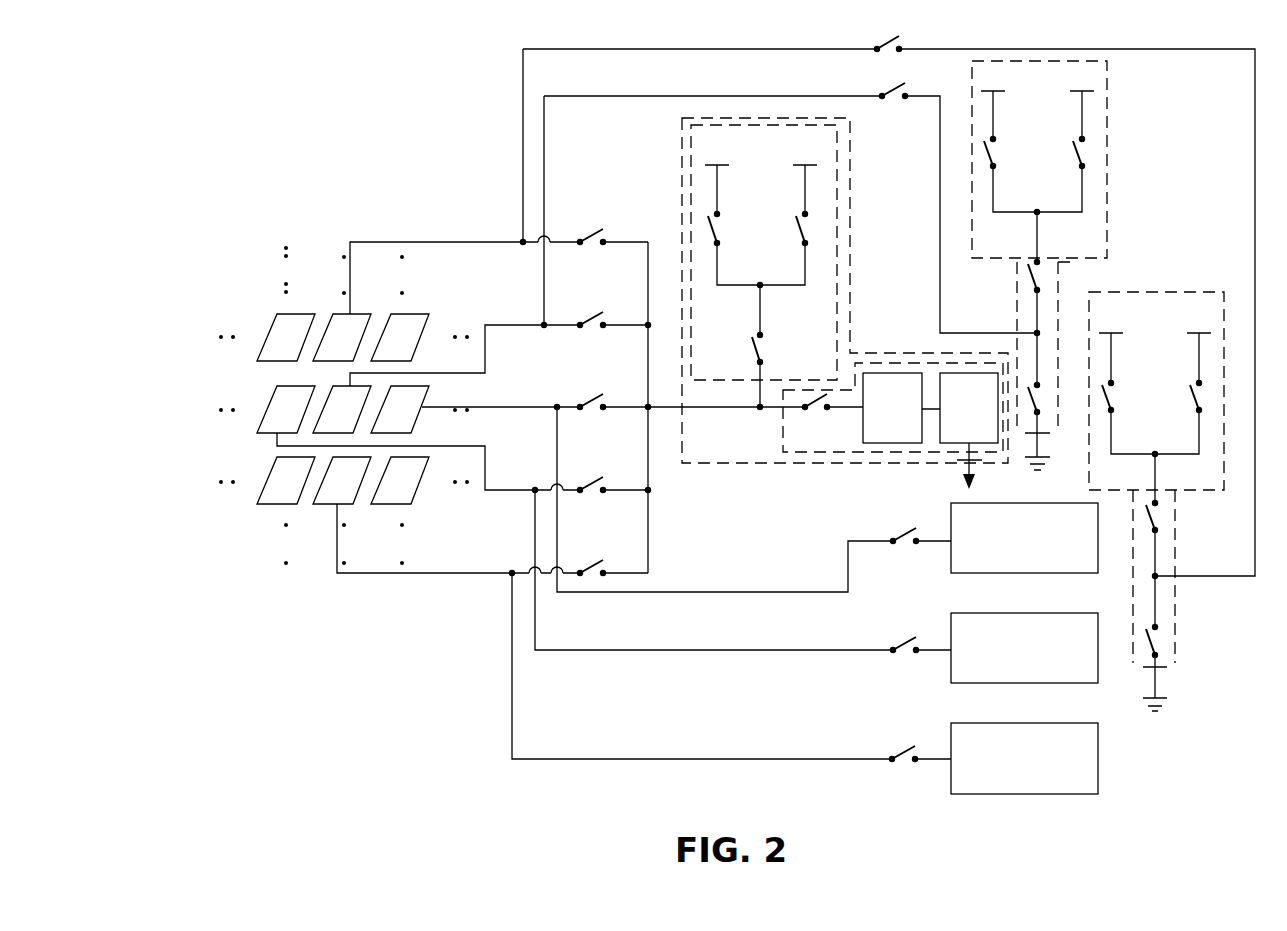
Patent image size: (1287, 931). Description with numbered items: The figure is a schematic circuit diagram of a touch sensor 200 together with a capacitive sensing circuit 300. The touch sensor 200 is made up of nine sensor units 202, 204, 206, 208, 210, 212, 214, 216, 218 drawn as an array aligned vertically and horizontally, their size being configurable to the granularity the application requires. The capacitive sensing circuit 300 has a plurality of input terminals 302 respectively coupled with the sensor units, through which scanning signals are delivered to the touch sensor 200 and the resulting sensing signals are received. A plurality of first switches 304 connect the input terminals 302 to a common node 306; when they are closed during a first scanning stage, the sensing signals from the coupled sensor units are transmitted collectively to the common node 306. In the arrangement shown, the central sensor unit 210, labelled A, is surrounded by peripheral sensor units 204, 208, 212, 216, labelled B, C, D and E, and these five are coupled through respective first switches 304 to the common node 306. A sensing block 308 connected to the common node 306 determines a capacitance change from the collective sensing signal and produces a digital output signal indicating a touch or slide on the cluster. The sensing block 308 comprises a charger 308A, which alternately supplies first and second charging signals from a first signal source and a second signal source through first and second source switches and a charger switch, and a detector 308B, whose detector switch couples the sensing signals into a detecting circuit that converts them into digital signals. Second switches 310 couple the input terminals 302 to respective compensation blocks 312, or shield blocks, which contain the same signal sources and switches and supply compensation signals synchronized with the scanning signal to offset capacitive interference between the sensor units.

The touch sensor 200 is at (228, 232).
The sensor unit 202 is at (277, 332).
The sensor unit 204 is at (350, 322).
The sensor unit 206 is at (410, 325).
The sensor unit 208 is at (277, 418).
The sensor unit 210 is at (315, 428).
The sensor unit 212 is at (430, 407).
The sensor unit 214 is at (265, 494).
The sensor unit 216 is at (334, 502).
The sensor unit 218 is at (408, 487).
The capacitive sensing circuit 300 is at (495, 125).
The input terminals 302 is at (455, 608).
The first switches 304 is at (592, 232).
The common node 306 is at (648, 408).
The sensing block 308 is at (850, 297).
The charger 308A is at (775, 380).
The detector 308B is at (782, 425).
The second switches 310 is at (895, 102).
The compensation blocks 312 is at (1107, 172).